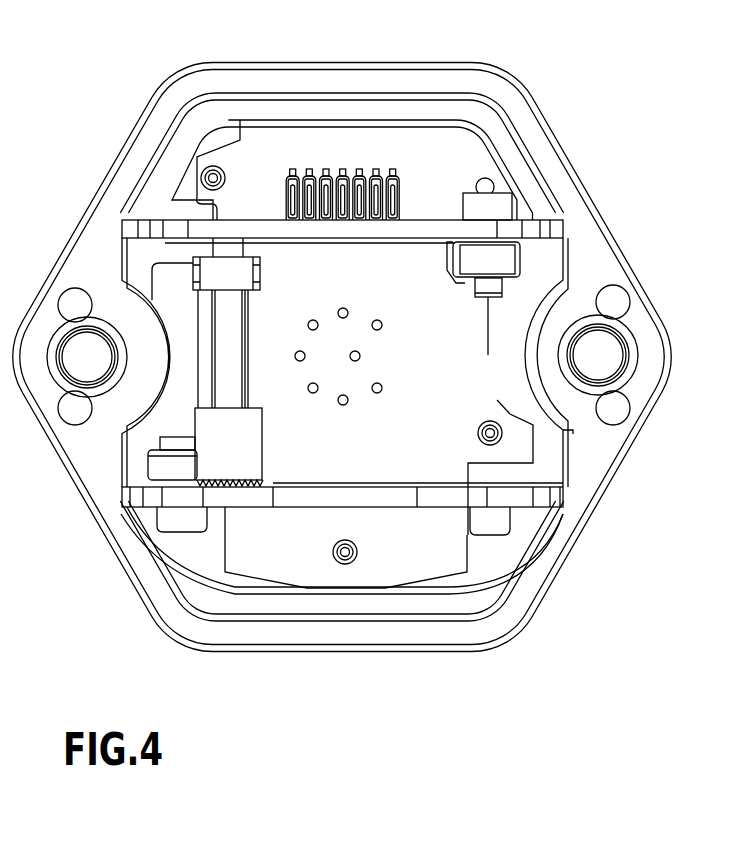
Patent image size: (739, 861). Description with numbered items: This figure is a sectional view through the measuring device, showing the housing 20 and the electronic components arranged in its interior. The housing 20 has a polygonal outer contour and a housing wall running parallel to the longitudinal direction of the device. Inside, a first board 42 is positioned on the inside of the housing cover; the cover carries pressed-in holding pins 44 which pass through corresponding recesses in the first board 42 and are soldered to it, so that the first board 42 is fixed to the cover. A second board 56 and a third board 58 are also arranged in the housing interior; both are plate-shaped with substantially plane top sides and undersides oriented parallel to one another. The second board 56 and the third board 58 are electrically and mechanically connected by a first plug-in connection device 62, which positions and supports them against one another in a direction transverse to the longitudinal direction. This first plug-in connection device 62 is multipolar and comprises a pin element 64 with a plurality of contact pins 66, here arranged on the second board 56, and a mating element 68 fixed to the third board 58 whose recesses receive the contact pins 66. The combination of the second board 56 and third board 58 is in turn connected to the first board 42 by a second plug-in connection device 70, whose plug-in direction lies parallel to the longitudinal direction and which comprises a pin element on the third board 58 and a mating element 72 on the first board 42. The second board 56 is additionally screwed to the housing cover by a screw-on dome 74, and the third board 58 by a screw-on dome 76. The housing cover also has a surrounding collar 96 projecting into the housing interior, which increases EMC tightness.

The housing 20 is at (266, 84).
The first board 42 is at (408, 553).
The holding pins 44 is at (381, 385).
The second board 56 is at (285, 497).
The third board 58 is at (425, 230).
The first plug-in connection device 62 is at (183, 425).
The pin element 64 is at (258, 278).
The contact pins 66 is at (258, 332).
The mating element 68 is at (240, 450).
The second plug-in connection device 70 is at (390, 116).
The mating element 72 is at (392, 178).
The screw-on dome 74 is at (170, 483).
The screw-on dome 76 is at (497, 257).
The surrounding collar 96 is at (487, 580).